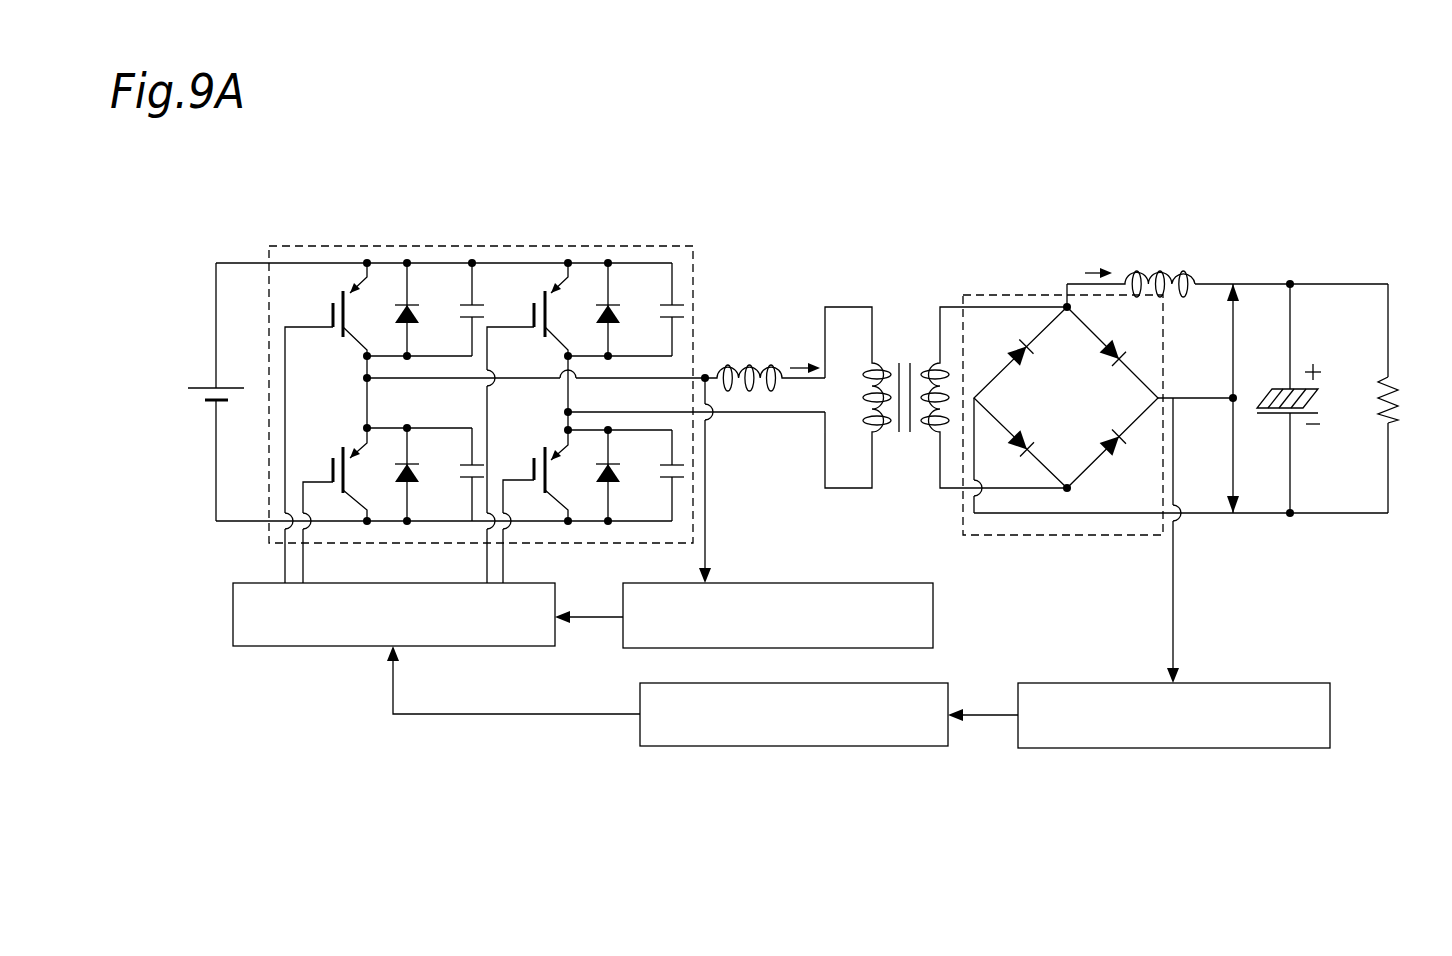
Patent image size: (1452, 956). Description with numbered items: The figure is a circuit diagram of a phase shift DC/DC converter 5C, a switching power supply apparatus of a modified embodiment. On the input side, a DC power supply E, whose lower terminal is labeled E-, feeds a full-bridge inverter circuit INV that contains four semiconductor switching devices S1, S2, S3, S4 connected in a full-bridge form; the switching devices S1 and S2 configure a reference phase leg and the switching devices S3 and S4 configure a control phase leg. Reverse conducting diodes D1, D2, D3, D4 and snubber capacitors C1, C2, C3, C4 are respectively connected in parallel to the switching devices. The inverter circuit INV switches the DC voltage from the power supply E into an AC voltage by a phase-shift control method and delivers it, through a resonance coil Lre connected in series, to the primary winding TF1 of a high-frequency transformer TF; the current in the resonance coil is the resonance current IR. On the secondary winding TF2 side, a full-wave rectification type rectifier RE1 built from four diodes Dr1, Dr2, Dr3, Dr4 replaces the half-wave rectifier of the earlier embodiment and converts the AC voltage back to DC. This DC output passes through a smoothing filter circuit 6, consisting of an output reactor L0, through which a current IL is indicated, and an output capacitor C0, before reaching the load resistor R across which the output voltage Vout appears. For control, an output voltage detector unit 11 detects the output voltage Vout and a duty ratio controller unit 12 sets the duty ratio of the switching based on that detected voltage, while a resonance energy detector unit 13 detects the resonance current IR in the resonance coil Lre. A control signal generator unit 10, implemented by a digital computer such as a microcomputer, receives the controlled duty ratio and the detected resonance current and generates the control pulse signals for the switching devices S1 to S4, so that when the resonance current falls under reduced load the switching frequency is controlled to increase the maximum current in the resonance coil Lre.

The phase shift DC/DC converter 5C is at (261, 211).
The full-bridge inverter circuit INV is at (481, 380).
The switching device S1 is at (328, 421).
The switching device S2 is at (332, 503).
The switching device S3 is at (529, 421).
The switching device S4 is at (534, 504).
The reverse conducting diode D1 is at (388, 309).
The reverse conducting diode D2 is at (388, 474).
The reverse conducting diode D3 is at (590, 309).
The reverse conducting diode D4 is at (589, 475).
The snubber capacitor C1 is at (454, 307).
The snubber capacitor C2 is at (454, 474).
The snubber capacitor C3 is at (654, 309).
The snubber capacitor C4 is at (654, 475).
The DC power supply E is at (219, 392).
The negative terminal of power supply E- is at (210, 404).
The resonance coil Lre is at (765, 360).
The resonance current IR is at (805, 351).
The high-frequency transformer TF is at (905, 363).
The primary winding TF1 is at (882, 363).
The secondary winding TF2 is at (925, 363).
The full-wave rectification type rectifier RE1 is at (1098, 406).
The rectifying diode Dr1 is at (1029, 369).
The rectifying diode Dr2 is at (1030, 430).
The rectifying diode Dr3 is at (1104, 368).
The rectifying diode Dr4 is at (1104, 429).
The smoothing filter circuit 6 is at (1355, 228).
The inductor current IL is at (1097, 258).
The output reactor L0 is at (1131, 265).
The output voltage Vout is at (1208, 398).
The output capacitor C0 is at (1306, 398).
The load resistor R is at (1399, 398).
The control signal generator unit 10 is at (233, 612).
The output voltage detector unit 11 is at (1280, 683).
The duty ratio controller unit 12 is at (793, 746).
The resonance energy detector unit 13 is at (873, 583).